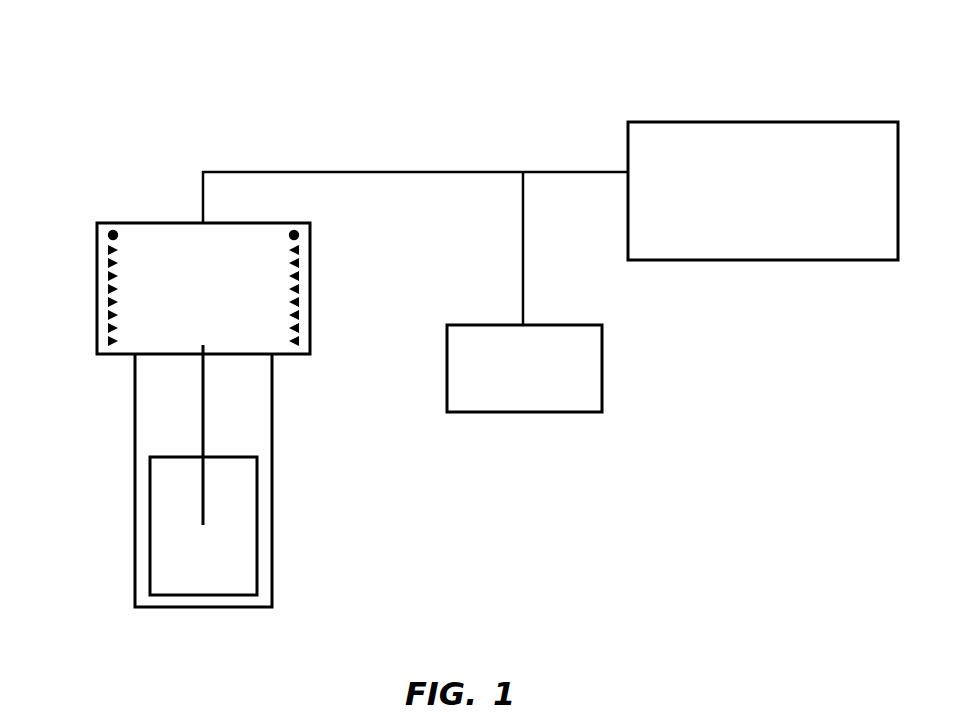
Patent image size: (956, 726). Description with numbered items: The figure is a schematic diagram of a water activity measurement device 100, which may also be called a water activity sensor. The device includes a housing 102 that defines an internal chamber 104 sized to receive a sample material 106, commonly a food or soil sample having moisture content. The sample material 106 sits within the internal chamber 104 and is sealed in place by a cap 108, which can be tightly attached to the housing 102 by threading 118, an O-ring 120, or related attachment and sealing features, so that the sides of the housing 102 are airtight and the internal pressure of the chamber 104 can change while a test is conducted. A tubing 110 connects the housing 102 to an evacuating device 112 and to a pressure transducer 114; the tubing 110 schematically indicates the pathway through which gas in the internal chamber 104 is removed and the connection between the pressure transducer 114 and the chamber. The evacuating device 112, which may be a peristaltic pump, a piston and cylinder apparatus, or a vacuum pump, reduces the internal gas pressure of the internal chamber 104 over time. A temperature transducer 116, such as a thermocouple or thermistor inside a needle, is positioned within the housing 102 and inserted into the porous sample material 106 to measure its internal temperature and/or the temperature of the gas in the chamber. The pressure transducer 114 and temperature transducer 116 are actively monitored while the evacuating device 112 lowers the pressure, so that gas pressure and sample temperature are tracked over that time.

The water activity measurement device 100 is at (660, 84).
The housing 102 is at (273, 508).
The internal chamber 104 is at (248, 413).
The sample material 106 is at (158, 503).
The cap 108 is at (165, 240).
The tubing 110 is at (287, 172).
The evacuating device 112 is at (765, 243).
The pressure transducer 114 is at (592, 372).
The temperature transducer 116 is at (197, 404).
The threading 118 is at (296, 290).
The O-ring 120 is at (298, 235).